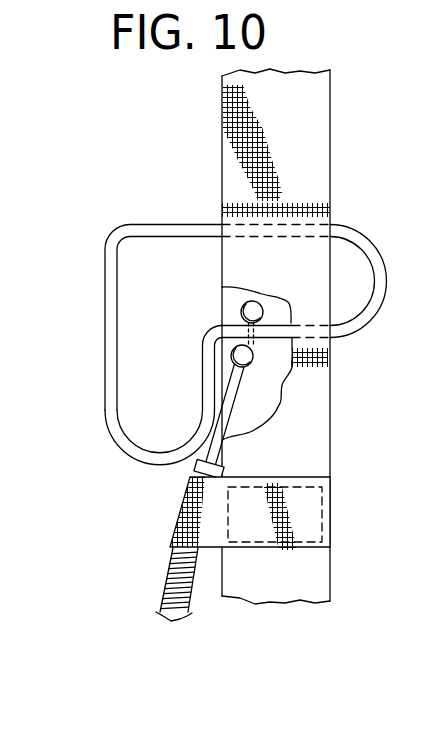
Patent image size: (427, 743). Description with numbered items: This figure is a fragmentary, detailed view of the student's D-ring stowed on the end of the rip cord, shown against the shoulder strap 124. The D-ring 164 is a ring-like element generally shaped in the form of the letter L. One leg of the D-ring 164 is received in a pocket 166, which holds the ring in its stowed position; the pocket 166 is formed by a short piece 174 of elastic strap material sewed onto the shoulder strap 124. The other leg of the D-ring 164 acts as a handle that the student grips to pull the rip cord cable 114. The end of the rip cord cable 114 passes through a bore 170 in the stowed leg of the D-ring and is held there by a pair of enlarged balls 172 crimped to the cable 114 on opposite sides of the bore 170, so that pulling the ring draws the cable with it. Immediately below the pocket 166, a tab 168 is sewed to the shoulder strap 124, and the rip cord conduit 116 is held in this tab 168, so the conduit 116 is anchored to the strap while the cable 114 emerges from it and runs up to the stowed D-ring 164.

The shoulder strap 124 is at (223, 105).
The D-ring 164 is at (104, 247).
The pocket 166 is at (336, 262).
The short piece of elastic strap material 174 is at (228, 264).
The bore 170 is at (219, 330).
The enlarged balls 172 is at (247, 364).
The rip cord cable 114 is at (217, 414).
The tab 168 is at (196, 514).
The rip cord conduit 116 is at (172, 590).